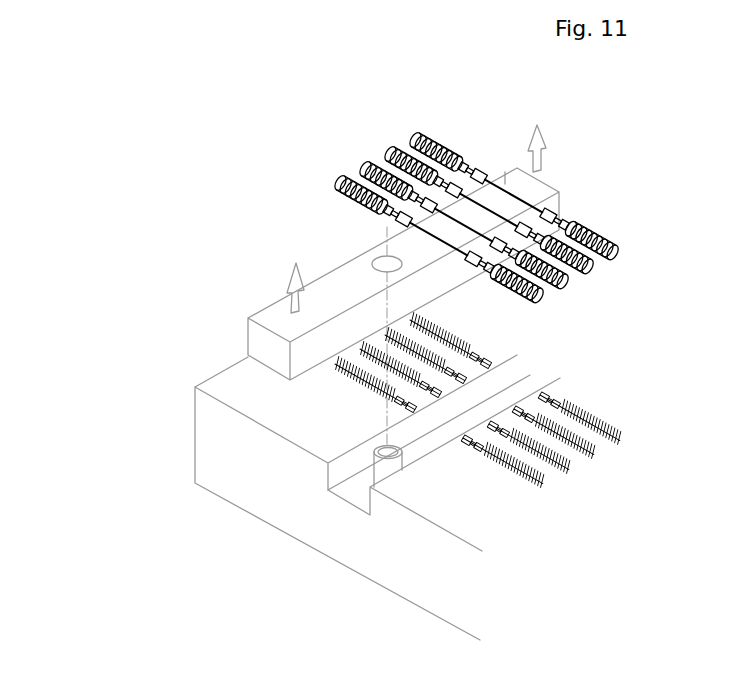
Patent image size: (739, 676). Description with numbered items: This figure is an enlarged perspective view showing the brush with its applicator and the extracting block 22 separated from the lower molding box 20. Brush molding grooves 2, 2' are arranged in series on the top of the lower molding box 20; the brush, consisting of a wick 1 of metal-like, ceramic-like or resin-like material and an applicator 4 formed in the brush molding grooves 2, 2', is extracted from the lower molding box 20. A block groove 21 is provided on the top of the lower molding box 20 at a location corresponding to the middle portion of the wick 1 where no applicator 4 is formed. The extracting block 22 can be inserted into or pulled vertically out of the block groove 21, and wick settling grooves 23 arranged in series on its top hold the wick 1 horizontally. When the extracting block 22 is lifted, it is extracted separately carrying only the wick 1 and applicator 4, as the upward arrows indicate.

The wick 1 is at (540, 197).
The brush molding groove 2 is at (464, 431).
The brush molding groove 2' is at (587, 439).
The applicator 4 is at (597, 225).
The lower molding box 20 is at (243, 485).
The block groove 21 is at (357, 498).
The extracting block 22 is at (273, 310).
The wick settling groove 23 is at (505, 172).